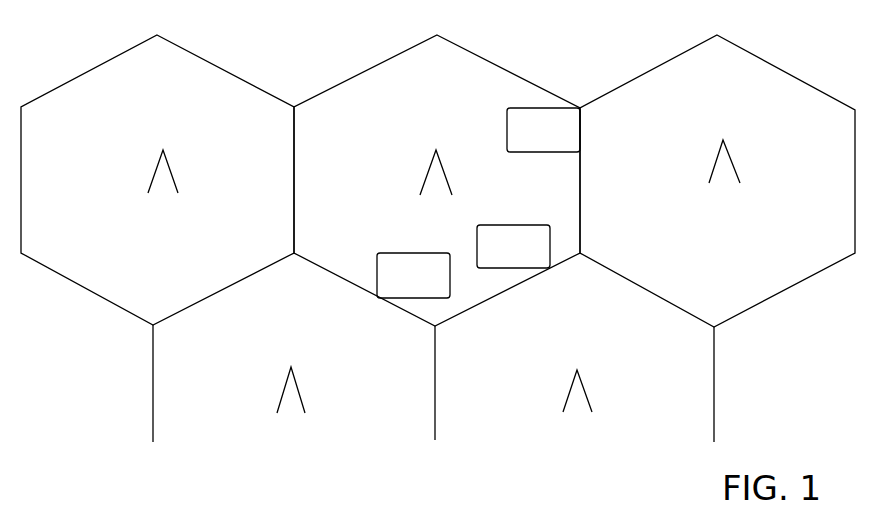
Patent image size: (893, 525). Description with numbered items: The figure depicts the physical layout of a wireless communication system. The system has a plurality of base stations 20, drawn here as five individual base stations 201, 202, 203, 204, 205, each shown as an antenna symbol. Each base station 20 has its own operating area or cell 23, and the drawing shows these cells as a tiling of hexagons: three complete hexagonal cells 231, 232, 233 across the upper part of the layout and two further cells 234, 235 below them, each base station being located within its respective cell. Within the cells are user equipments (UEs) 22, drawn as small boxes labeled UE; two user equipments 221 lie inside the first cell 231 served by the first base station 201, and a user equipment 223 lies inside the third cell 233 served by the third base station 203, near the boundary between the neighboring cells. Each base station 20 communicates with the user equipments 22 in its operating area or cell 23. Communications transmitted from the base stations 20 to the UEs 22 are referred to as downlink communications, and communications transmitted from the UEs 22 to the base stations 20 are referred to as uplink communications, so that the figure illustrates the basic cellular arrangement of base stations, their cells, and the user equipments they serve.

The base station 20 is at (473, 278).
The base station 201 is at (465, 173).
The base station 202 is at (754, 163).
The base station 203 is at (193, 174).
The base station 204 is at (322, 391).
The base station 205 is at (608, 392).
The user equipment 22 is at (457, 201).
The user equipment 221 is at (507, 186).
The user equipment 223 is at (392, 266).
The cell 23 is at (438, 238).
The cell 231 is at (437, 180).
The cell 232 is at (717, 181).
The cell 233 is at (157, 180).
The cell 234 is at (181, 383).
The cell 235 is at (574, 384).